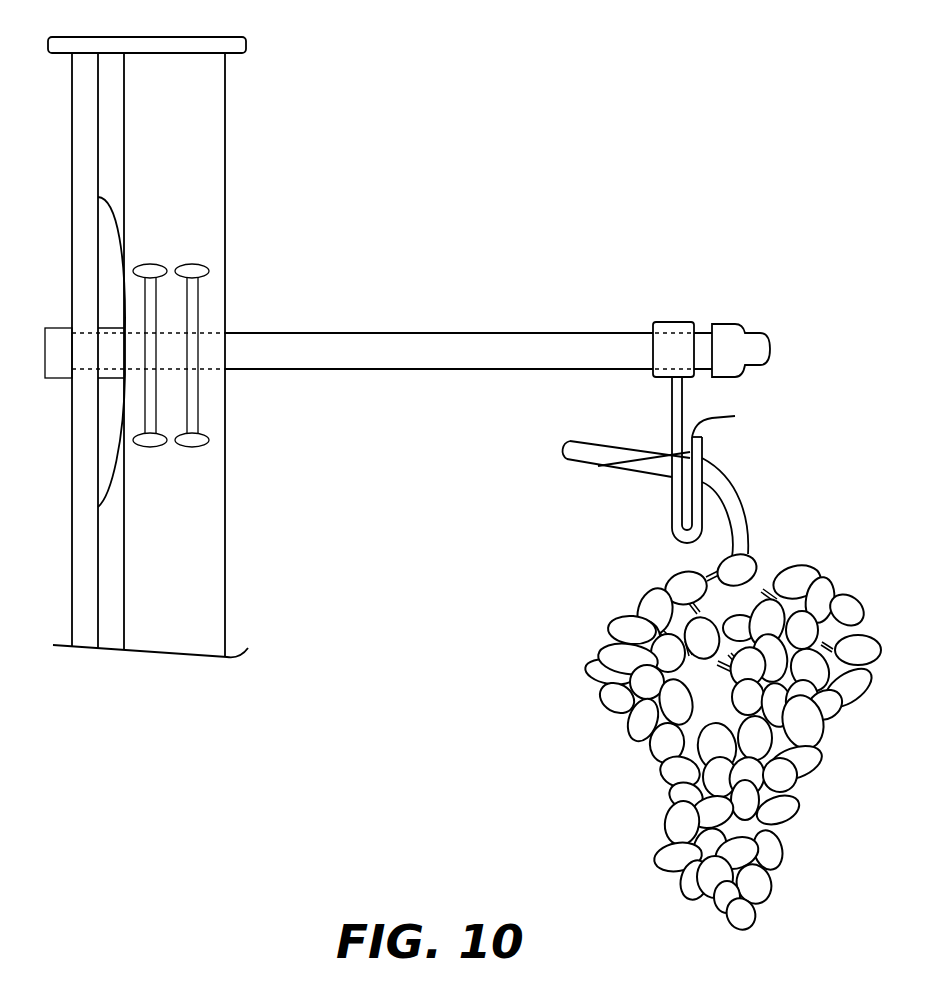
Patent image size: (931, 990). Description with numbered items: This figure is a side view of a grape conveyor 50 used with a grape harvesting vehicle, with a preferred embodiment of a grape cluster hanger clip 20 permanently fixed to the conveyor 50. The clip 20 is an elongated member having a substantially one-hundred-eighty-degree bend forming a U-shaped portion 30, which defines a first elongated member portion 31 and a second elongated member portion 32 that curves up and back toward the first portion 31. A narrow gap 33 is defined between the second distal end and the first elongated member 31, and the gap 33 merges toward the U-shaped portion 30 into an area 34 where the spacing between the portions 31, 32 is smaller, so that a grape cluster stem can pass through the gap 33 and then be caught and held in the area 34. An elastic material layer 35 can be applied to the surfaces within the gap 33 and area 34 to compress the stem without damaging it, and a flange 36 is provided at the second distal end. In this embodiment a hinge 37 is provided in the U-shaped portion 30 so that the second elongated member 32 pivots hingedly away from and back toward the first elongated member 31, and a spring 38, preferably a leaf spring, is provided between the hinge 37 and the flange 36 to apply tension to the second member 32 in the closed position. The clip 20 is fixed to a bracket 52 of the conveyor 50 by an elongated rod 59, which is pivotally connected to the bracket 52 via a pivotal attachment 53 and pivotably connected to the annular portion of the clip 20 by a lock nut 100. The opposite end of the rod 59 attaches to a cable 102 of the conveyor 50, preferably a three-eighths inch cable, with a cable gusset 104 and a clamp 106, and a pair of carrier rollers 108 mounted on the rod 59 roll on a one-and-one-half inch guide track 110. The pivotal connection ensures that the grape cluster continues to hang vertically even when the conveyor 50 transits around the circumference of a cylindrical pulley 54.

The grape cluster hanger clip 20 is at (567, 455).
The U-shaped portion 30 is at (685, 547).
The first elongated member portion 31 is at (672, 523).
The second elongated member portion 32 is at (703, 476).
The gap 33 is at (683, 415).
The area 34 is at (682, 465).
The elastic material layer 35 is at (702, 437).
The flange 36 is at (735, 416).
The hinge 37 is at (710, 548).
The spring 38 is at (704, 461).
The conveyor 50 is at (215, 305).
The bracket 52 is at (677, 322).
The pivotal attachment 53 is at (667, 350).
The cylindrical pulley 54 is at (246, 44).
The elongated rod 59 is at (384, 333).
The lock nut 100 is at (755, 345).
The cable 102 is at (85, 160).
The cable gusset 104 is at (105, 245).
The clamp 106 is at (62, 373).
The carrier rollers 108 is at (193, 417).
The guide track 110 is at (215, 588).